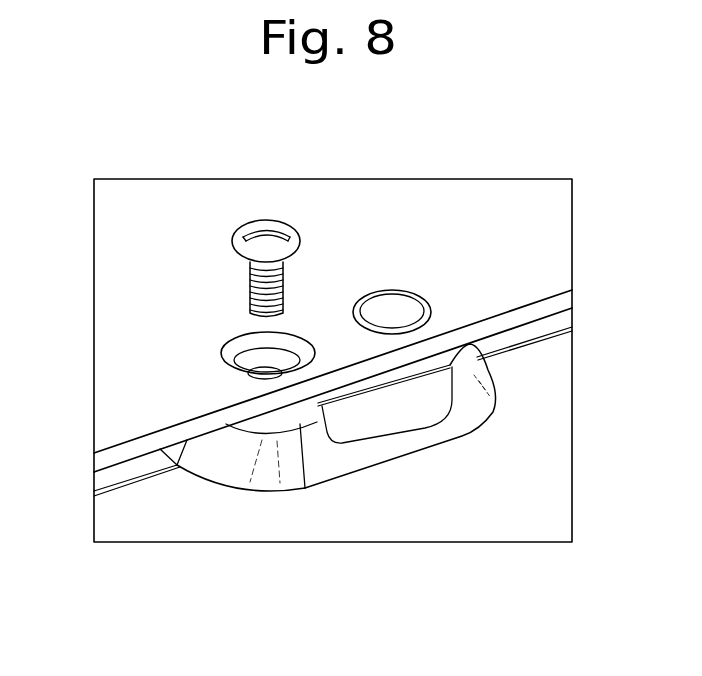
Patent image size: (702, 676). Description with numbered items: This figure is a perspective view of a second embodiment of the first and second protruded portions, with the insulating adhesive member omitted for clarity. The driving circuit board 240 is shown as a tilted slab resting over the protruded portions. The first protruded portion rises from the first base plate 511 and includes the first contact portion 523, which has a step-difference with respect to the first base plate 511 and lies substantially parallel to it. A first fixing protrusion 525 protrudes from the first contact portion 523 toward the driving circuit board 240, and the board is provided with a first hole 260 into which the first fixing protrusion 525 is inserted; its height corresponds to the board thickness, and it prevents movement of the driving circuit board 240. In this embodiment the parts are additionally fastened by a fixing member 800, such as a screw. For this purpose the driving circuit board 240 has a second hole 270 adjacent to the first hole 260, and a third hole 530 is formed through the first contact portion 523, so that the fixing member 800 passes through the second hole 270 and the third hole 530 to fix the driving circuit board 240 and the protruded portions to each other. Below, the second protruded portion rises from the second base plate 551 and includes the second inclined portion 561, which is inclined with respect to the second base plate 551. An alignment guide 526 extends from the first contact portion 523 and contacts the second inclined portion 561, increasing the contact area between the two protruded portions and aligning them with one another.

The fixing member 800 is at (267, 236).
The second hole 270 is at (239, 325).
The third hole 530 is at (253, 373).
The first hole 260 is at (416, 286).
The first fixing protrusion 525 is at (385, 308).
The driving circuit board 240 is at (112, 341).
The first base plate 511 is at (104, 478).
The first contact portion 523 is at (307, 488).
The alignment guide 526 is at (410, 410).
The second inclined portion 561 is at (266, 473).
The second base plate 551 is at (176, 527).